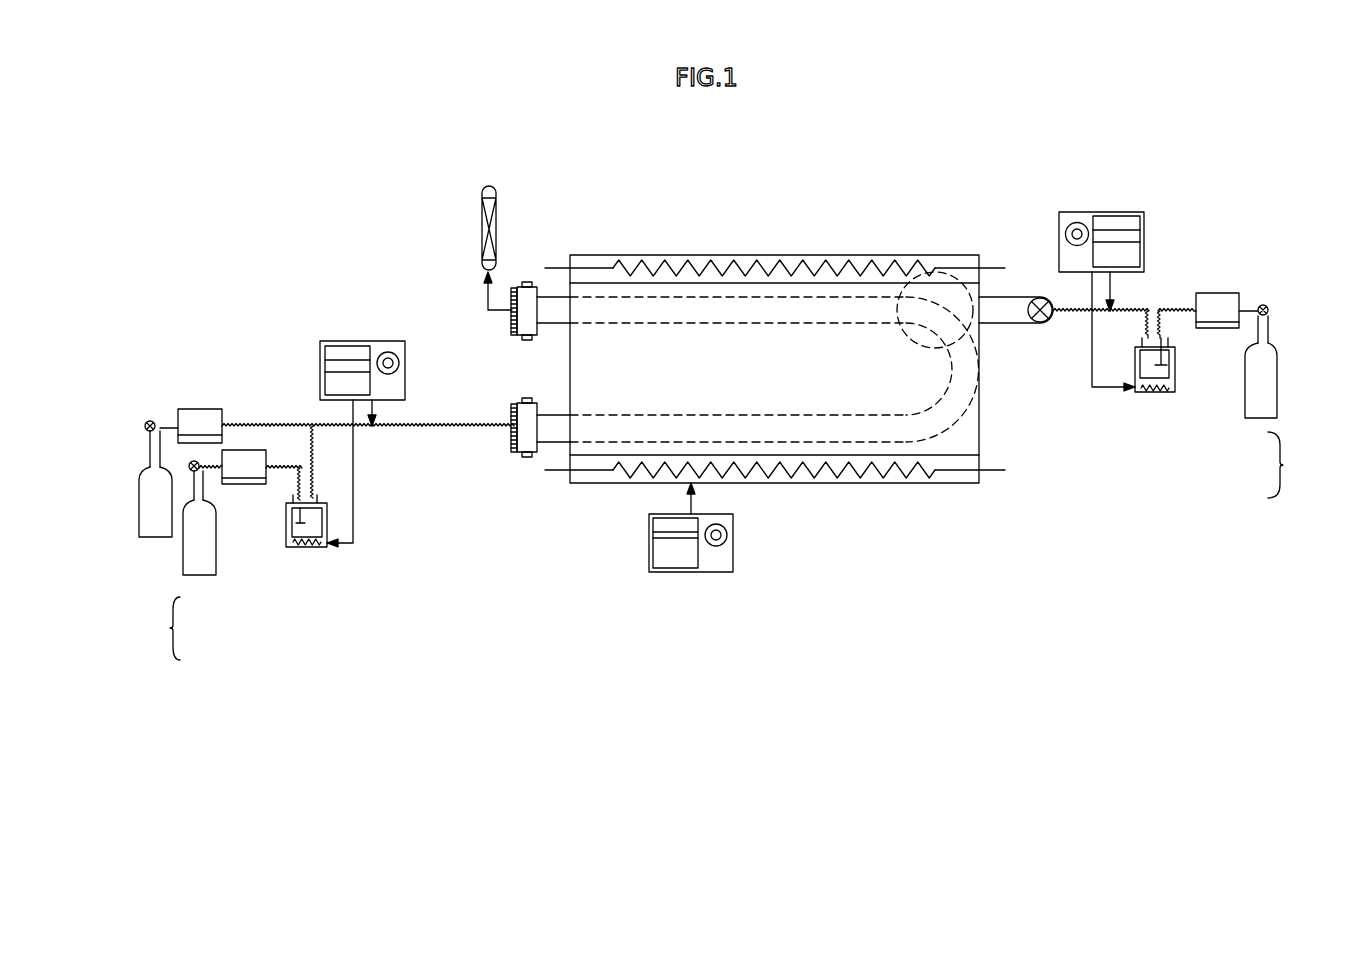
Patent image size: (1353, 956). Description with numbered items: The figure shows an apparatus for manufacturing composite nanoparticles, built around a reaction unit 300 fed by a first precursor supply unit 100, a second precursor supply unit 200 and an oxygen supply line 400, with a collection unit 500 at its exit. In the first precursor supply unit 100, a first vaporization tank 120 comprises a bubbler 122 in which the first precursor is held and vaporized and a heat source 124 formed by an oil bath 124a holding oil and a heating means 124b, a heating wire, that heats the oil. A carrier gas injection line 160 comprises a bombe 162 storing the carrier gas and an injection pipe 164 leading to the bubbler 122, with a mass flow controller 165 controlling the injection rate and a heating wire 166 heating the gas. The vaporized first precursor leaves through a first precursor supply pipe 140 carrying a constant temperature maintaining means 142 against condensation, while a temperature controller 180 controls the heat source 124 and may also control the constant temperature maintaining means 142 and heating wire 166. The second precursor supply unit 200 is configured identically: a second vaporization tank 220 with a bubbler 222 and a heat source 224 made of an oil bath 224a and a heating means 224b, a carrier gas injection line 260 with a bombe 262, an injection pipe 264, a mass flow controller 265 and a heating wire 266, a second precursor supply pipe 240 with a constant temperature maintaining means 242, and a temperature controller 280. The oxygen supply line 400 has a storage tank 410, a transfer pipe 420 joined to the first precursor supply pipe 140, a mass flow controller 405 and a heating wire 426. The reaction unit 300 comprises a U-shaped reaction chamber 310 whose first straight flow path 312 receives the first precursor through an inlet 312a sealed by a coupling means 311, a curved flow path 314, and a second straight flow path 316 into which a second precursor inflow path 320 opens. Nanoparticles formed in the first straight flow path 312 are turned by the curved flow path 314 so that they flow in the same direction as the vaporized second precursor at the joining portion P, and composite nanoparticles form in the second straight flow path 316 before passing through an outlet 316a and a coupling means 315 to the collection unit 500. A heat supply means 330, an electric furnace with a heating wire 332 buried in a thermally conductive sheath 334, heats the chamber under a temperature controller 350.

The first precursor supply unit 100 is at (370, 498).
The first vaporization tank 120 is at (323, 550).
The bubbler 122 is at (328, 520).
The heat source 124 is at (156, 628).
The oil bath 124a is at (287, 527).
The heating means 124b is at (310, 547).
The first precursor supply pipe 140 is at (417, 423).
The constant temperature maintaining means 142 is at (460, 430).
The carrier gas injection line 160 is at (187, 487).
The bombe 162 is at (195, 553).
The injection pipe 164 is at (303, 480).
The mass flow controller 165 is at (252, 450).
The heating wire 166 is at (287, 467).
The temperature controller 180 is at (363, 340).
The second precursor supply unit 200 is at (1158, 277).
The second vaporization tank 220 is at (1148, 397).
The bubbler 222 is at (1168, 355).
The heat source 224 is at (1294, 465).
The oil bath 224a is at (1175, 377).
The heating means 224b is at (1158, 392).
The second precursor supply pipe 240 is at (1080, 317).
The constant temperature maintaining means 242 is at (1057, 305).
The carrier gas injection line 260 is at (1248, 310).
The bombe 262 is at (1267, 378).
The injection pipe 264 is at (1185, 310).
The mass flow controller 265 is at (1220, 293).
The heating wire 266 is at (1167, 310).
The temperature controller 280 is at (1083, 212).
The reaction unit 300 is at (557, 480).
The U-shaped reaction chamber 310 is at (910, 447).
The coupling means 311 is at (520, 417).
The first straight flow path 312 is at (767, 430).
The inlet 312a is at (555, 420).
The curved flow path 314 is at (958, 395).
The coupling means 315 is at (528, 293).
The second straight flow path 316 is at (742, 305).
The outlet 316a is at (555, 307).
The second precursor inflow path 320 is at (995, 297).
The heat supply means 330 is at (843, 263).
The heating wire 332 is at (797, 267).
The thermally conductive sheath 334 is at (752, 260).
The temperature controller 350 is at (713, 575).
The oxygen supply line 400 is at (158, 408).
The mass flow controller 405 is at (198, 410).
The storage tank 410 is at (150, 482).
The transfer pipe 420 is at (303, 423).
The heating wire 426 is at (243, 427).
The collection unit 500 is at (480, 227).
The joining portion P is at (937, 267).